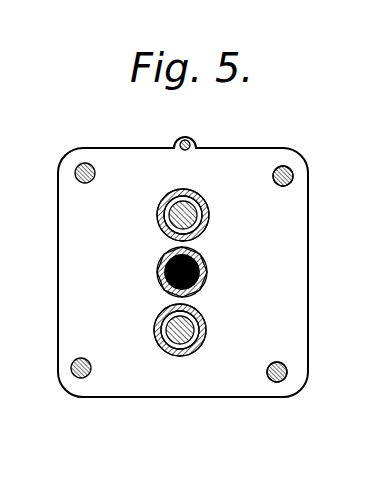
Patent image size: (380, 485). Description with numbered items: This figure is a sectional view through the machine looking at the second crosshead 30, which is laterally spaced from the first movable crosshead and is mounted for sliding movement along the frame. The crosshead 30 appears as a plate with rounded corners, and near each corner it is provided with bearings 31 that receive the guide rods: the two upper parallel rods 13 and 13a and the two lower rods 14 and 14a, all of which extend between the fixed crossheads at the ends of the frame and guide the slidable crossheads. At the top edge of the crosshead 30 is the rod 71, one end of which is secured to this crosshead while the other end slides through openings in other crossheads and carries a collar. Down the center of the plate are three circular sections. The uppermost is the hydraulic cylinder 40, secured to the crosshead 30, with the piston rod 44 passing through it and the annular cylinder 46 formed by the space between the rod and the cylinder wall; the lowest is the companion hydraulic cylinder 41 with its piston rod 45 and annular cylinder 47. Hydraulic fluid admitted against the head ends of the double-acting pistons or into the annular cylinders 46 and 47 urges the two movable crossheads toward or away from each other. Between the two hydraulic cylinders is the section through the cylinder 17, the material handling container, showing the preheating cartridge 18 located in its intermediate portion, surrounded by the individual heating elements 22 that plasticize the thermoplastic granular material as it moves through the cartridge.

The second crosshead 30 is at (125, 153).
The rod 71 is at (188, 141).
The upper rod 13 is at (290, 169).
The upper rod 13a is at (74, 173).
The lower rod 14 is at (288, 372).
The lower rod 14a is at (71, 368).
The bearings 31 is at (287, 186).
The annular cylinder 46 is at (158, 211).
The hydraulic cylinder 40 is at (205, 233).
The piston rod 44 is at (196, 211).
The cylinder 17 is at (160, 266).
The preheating cartridge 18 is at (200, 270).
The heating elements 22 is at (200, 285).
The annular cylinder 47 is at (156, 325).
The hydraulic cylinder 41 is at (190, 344).
The piston rod 45 is at (205, 323).